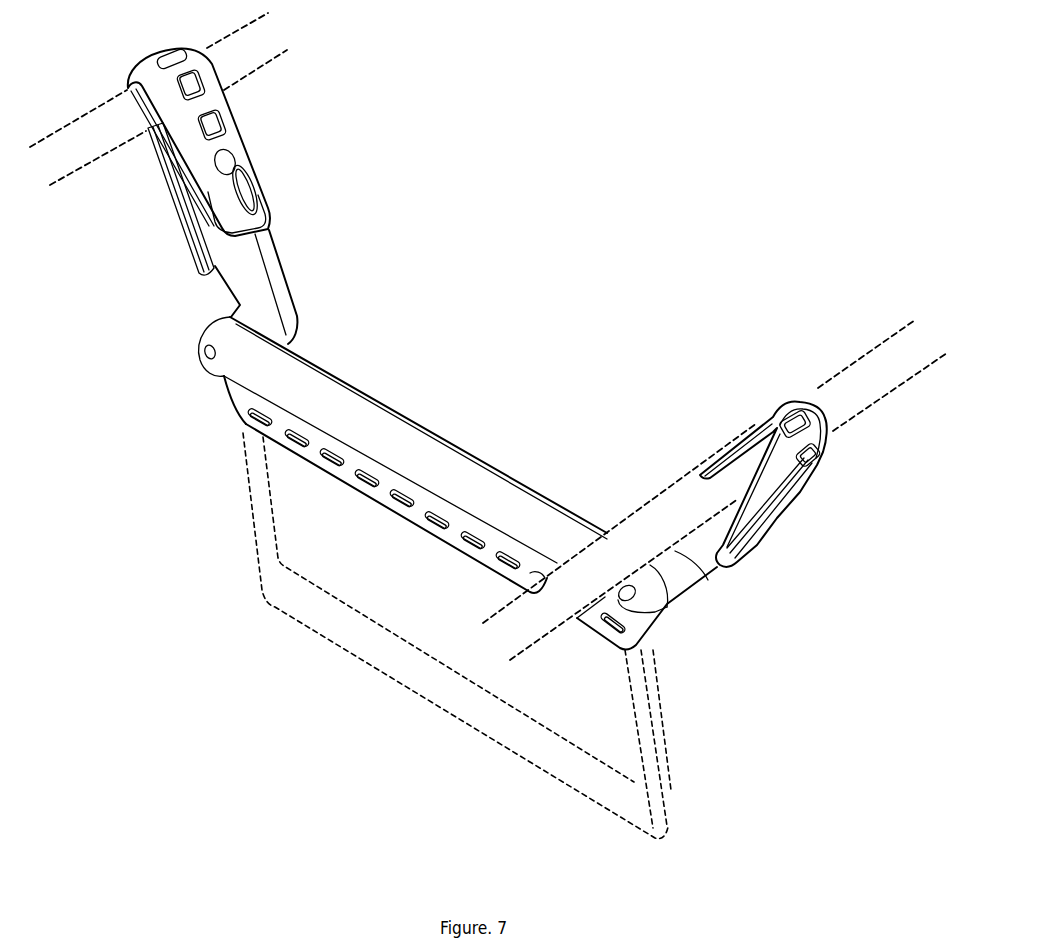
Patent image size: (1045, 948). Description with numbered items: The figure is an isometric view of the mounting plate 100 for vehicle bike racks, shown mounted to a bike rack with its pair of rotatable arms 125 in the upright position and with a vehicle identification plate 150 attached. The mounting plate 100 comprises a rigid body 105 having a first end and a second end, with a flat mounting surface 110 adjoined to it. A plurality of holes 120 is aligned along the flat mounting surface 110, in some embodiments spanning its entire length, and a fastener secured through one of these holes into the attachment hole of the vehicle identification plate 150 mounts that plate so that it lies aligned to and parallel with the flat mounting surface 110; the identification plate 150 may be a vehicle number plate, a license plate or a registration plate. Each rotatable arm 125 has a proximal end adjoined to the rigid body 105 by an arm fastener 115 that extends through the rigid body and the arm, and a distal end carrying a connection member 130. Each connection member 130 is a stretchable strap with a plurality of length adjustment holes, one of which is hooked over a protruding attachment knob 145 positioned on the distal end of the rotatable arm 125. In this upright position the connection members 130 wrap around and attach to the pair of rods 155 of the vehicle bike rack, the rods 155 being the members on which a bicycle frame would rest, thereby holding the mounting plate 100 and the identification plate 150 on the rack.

The mounting plate 100 is at (556, 211).
The rigid body 105 is at (427, 436).
The flat mounting surface 110 is at (235, 393).
The arm fasteners 115 is at (198, 352).
The plurality of holes 120 is at (378, 495).
The rotatable arms 125 is at (266, 284).
The connection members 130 is at (265, 48).
The protruding attachment knob 145 is at (250, 200).
The vehicle identification plate 150 is at (678, 813).
The rods 155 is at (846, 390).